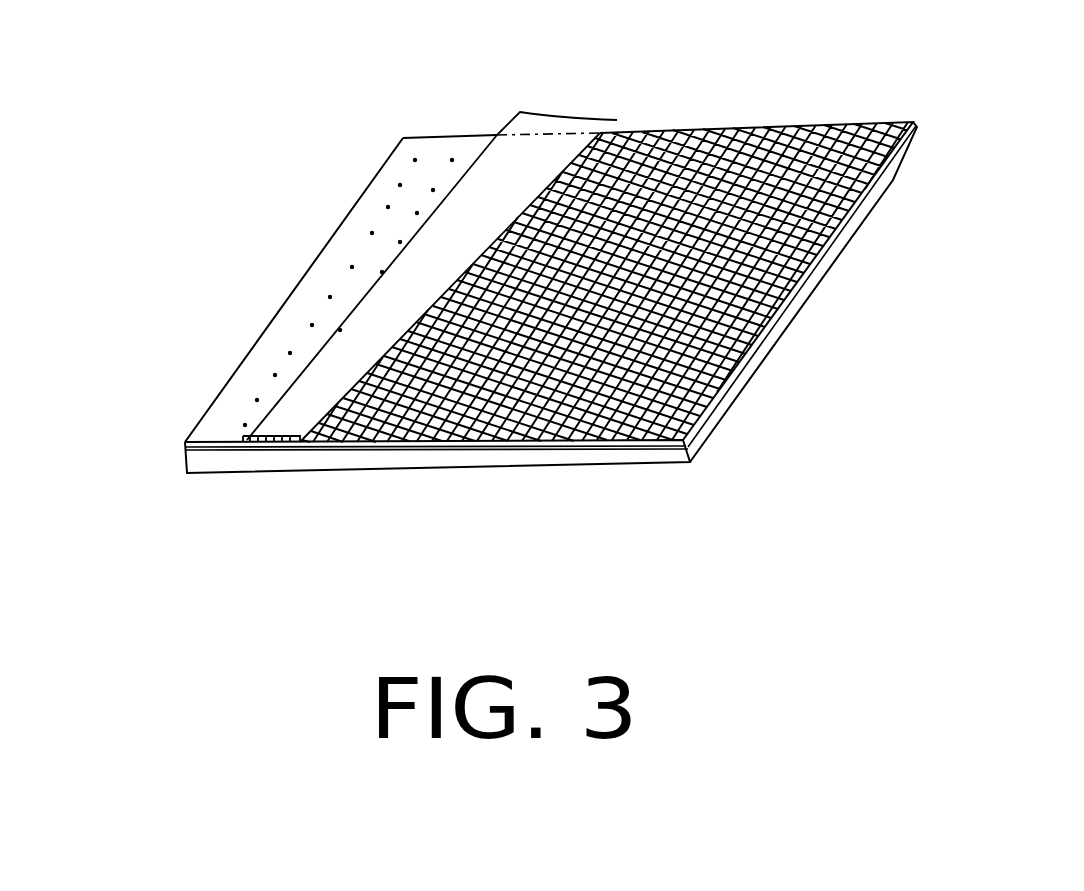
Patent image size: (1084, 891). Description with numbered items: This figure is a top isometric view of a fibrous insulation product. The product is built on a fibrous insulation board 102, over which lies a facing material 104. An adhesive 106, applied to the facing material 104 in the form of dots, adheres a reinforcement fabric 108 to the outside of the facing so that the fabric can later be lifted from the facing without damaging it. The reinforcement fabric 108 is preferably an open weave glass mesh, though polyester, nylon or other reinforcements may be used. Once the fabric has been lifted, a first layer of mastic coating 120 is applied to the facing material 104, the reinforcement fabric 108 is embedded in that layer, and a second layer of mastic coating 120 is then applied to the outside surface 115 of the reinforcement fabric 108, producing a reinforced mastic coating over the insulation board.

The fibrous insulation board 102 is at (263, 460).
The facing material 104 is at (183, 448).
The adhesive 106 is at (388, 207).
The reinforcement fabric 108 is at (647, 155).
The outside surface 115 is at (753, 127).
The mastic coating 120 is at (252, 375).